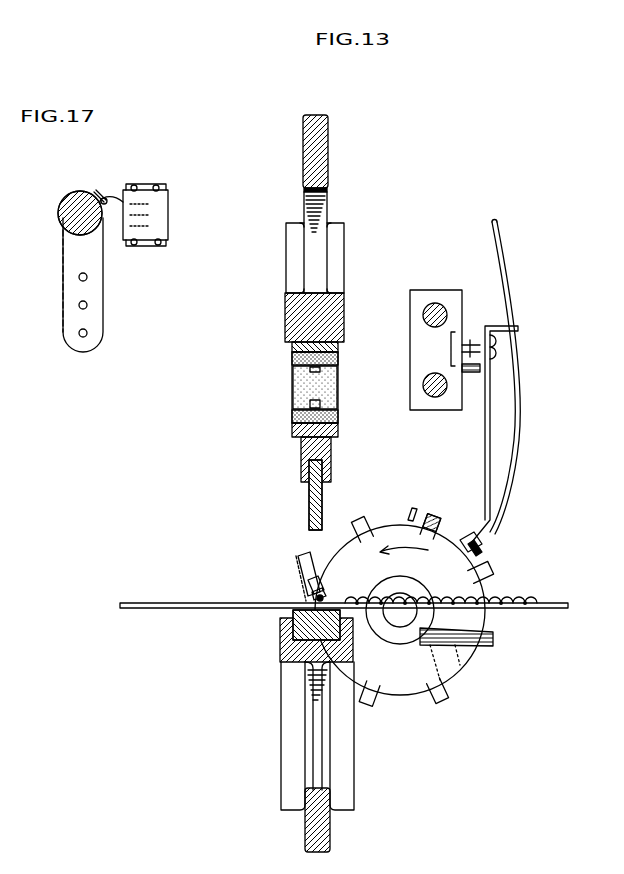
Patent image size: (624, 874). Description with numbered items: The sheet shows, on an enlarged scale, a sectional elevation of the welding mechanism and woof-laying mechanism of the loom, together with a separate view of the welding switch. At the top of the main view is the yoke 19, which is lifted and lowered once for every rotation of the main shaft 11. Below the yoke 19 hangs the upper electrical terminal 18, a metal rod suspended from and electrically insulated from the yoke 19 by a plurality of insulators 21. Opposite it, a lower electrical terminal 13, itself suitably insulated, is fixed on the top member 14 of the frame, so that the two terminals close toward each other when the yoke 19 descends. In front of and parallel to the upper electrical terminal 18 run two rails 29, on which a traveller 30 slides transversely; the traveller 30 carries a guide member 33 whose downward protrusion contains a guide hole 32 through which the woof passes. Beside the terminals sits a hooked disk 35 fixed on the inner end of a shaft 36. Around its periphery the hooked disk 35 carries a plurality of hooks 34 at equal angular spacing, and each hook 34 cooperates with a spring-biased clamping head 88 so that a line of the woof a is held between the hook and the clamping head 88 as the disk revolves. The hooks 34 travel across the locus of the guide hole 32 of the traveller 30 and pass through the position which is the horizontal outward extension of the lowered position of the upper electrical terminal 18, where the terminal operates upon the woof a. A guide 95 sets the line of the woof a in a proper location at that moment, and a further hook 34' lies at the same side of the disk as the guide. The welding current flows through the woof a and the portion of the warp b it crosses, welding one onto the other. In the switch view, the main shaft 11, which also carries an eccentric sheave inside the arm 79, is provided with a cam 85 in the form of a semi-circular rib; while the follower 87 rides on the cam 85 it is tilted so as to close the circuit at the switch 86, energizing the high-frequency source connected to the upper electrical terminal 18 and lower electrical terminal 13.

In FIG. 13, the yoke 19 is at (286, 302).
In FIG. 13, the insulators 21 is at (292, 396).
In FIG. 13, the upper electrical terminal 18 is at (309, 510).
In FIG. 13, the traveller 30 is at (445, 339).
In FIG. 13, the rails 29 is at (433, 323).
In FIG. 13, the woof a is at (504, 269).
In FIG. 13, the guide member 33 is at (482, 470).
In FIG. 13, the guide hole 32 is at (466, 537).
In FIG. 13, the warp b is at (548, 605).
In FIG. 13, the shaft 36 is at (398, 620).
In FIG. 13, the hooks 34 is at (416, 595).
In FIG. 13, the clamping head 88 is at (411, 512).
In FIG. 13, the hooked disk 35 is at (466, 652).
In FIG. 13, the guide 95 is at (299, 565).
In FIG. 13, the tooth 34' is at (298, 588).
In FIG. 13, the lower electrical terminal 13 is at (296, 632).
In FIG. 13, the top member 14 is at (281, 699).
In FIG. 17, the arm 79 is at (64, 295).
In FIG. 17, the main shaft 11 is at (82, 205).
In FIG. 17, the cam 85 is at (53, 202).
In FIG. 17, the switch 86 is at (156, 184).
In FIG. 17, the follower 87 is at (110, 195).